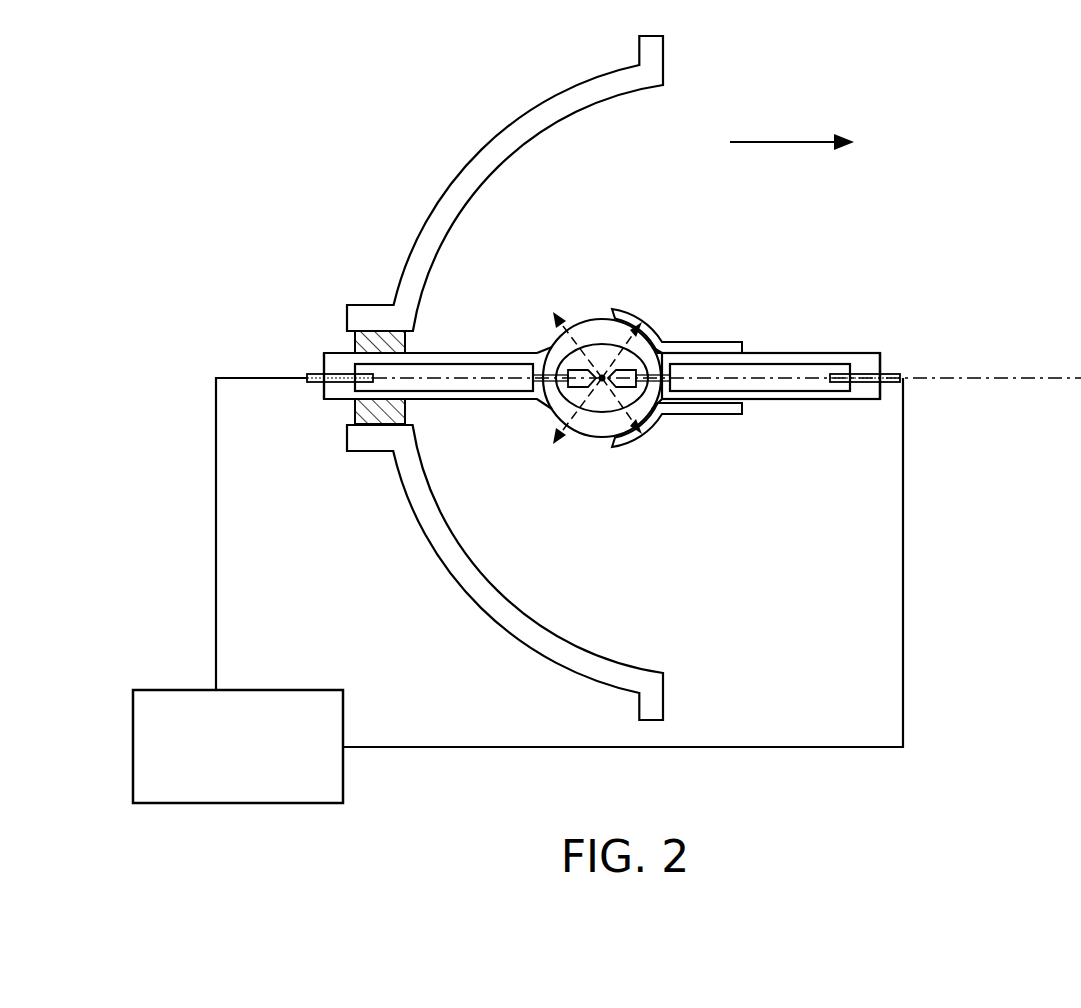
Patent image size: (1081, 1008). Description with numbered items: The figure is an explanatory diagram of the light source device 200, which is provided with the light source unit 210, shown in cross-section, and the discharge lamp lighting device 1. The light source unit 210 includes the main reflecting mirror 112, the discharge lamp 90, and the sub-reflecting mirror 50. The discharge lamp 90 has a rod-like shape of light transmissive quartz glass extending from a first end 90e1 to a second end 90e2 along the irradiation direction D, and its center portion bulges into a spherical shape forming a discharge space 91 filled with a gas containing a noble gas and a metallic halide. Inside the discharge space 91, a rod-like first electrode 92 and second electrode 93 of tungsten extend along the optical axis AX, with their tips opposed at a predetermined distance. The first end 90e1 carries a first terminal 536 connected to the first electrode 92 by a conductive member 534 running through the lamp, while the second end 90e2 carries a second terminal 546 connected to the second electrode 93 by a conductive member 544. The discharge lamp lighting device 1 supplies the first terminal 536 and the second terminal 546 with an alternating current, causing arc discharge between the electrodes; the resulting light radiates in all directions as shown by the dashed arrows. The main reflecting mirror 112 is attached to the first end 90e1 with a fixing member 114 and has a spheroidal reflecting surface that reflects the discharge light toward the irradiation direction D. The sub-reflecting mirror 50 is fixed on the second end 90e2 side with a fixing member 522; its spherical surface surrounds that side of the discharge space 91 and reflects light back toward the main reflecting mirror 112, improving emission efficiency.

The light source device 200 is at (986, 72).
The light source unit 210 is at (372, 137).
The main reflecting mirror 112 is at (497, 147).
The fixing member 114 is at (355, 350).
The discharge lamp 90 is at (592, 320).
The discharge space 91 is at (600, 400).
The first electrode 92 is at (552, 404).
The second electrode 93 is at (668, 415).
The sub-reflecting mirror 50 is at (633, 308).
The fixing member 522 is at (755, 353).
The conductive member 534 is at (466, 392).
The conductive member 544 is at (777, 392).
The first terminal 536 is at (322, 385).
The second terminal 546 is at (893, 385).
The first end 90e1 is at (340, 353).
The second end 90e2 is at (855, 353).
The discharge lamp lighting device 1 is at (275, 690).
The irradiation direction D is at (804, 142).
The optical axis AX is at (1032, 378).